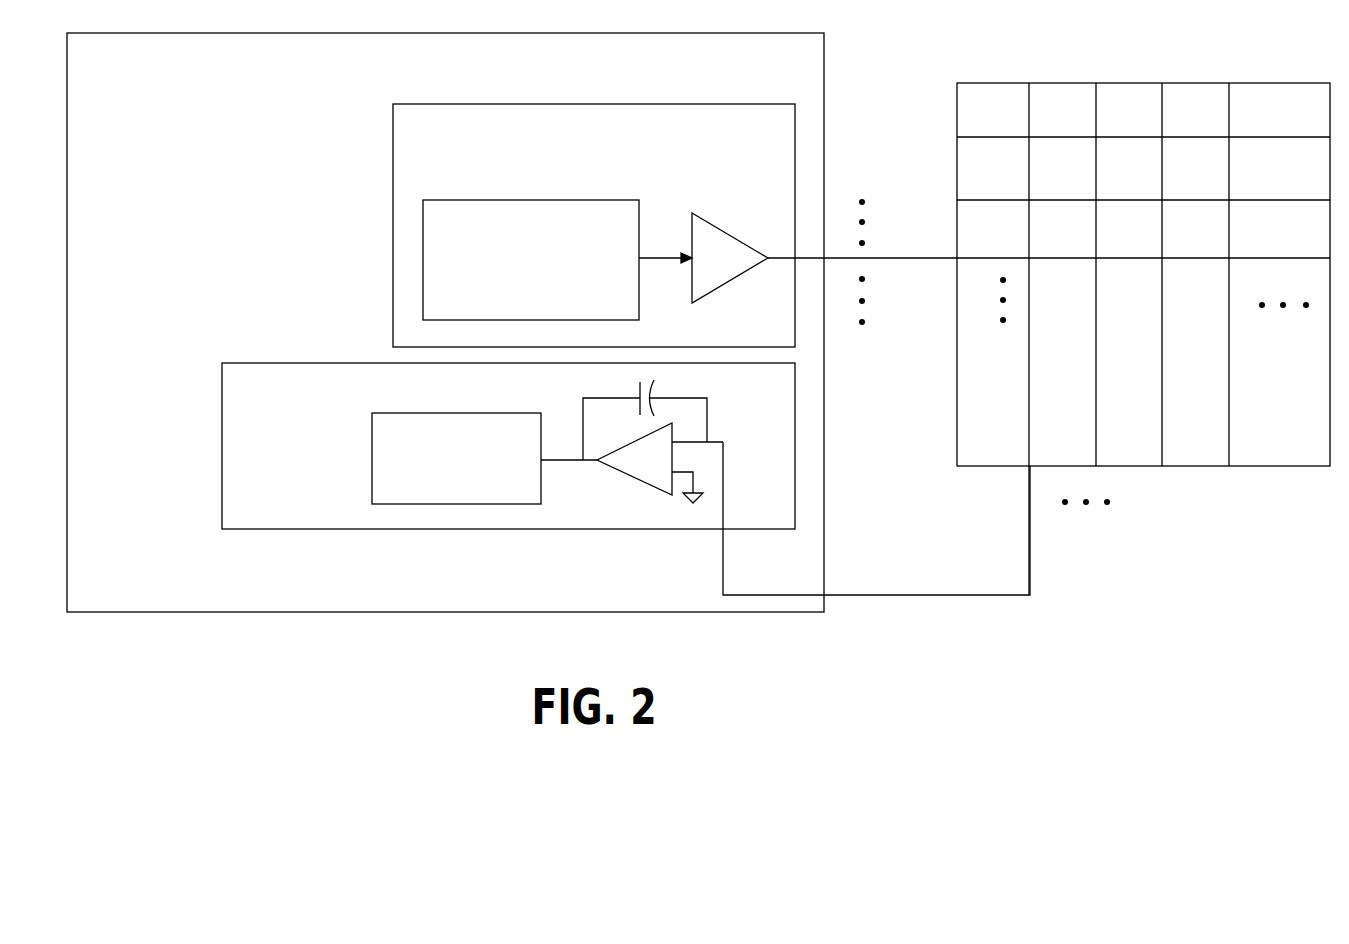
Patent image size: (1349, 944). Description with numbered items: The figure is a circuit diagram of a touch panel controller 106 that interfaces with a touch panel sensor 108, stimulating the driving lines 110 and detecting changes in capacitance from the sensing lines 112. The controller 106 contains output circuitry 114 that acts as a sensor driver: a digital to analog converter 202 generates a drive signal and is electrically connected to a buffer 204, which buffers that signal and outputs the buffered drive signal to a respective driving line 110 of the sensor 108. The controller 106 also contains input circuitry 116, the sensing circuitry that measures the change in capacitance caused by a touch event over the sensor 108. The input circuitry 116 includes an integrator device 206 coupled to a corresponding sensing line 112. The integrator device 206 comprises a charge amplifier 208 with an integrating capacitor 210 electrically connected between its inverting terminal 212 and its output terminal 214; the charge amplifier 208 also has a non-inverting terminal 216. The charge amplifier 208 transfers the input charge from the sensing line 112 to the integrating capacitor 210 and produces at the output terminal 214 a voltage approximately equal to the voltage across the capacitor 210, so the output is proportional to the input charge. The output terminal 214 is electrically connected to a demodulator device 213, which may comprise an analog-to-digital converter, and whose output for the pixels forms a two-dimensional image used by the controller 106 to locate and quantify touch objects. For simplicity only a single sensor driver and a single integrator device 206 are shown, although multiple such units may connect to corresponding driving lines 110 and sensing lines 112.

The touch panel controller 106 is at (213, 98).
The touch panel sensor 108 is at (998, 82).
The driving line 110 is at (995, 256).
The sensing line 112 is at (1028, 445).
The output circuitry 114 is at (511, 171).
The input circuitry 116 is at (270, 443).
The digital to analog converter 202 is at (514, 291).
The buffer 204 is at (713, 222).
The integrator device 206 is at (616, 488).
The charge amplifier 208 is at (668, 432).
The integrating capacitor 210 is at (636, 392).
The inverting terminal 212 is at (690, 440).
The demodulator device 213 is at (440, 498).
The output terminal 214 is at (597, 457).
The non-inverting terminal 216 is at (677, 473).